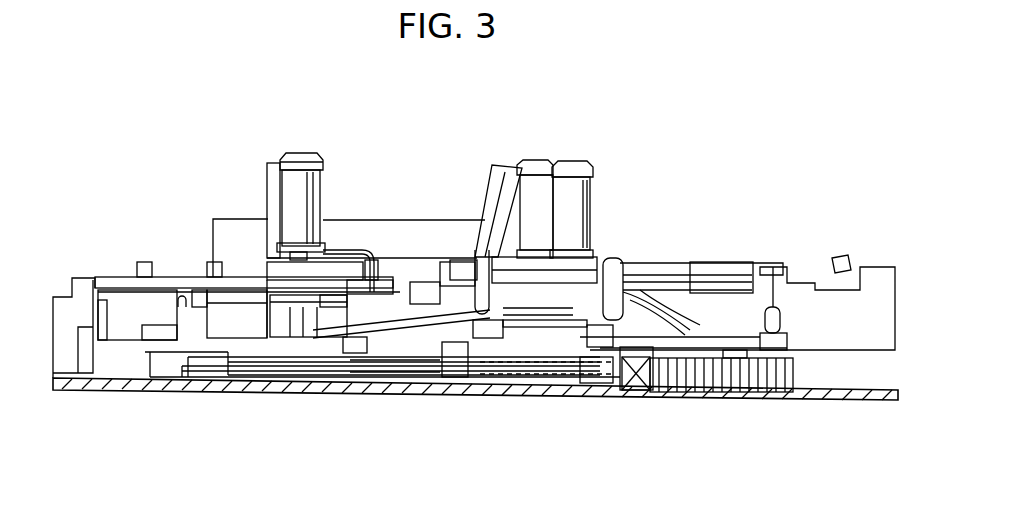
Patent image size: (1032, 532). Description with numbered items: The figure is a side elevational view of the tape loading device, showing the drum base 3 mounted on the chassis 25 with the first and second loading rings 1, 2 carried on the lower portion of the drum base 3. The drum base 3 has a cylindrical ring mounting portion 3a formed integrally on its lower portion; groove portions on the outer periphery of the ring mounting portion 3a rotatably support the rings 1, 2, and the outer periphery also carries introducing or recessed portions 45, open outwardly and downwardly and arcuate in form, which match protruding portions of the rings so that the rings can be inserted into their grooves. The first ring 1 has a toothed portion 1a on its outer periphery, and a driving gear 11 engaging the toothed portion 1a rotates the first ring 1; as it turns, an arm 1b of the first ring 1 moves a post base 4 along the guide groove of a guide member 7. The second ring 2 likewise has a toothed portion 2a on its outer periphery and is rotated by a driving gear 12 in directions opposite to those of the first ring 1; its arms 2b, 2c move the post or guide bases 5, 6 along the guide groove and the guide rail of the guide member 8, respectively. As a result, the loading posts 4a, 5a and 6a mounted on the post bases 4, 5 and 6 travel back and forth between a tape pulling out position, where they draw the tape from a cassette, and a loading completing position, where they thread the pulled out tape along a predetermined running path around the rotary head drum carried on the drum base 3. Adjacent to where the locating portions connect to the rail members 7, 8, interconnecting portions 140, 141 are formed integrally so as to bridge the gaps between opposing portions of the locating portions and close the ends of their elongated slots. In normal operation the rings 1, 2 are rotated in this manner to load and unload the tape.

The first loading ring 1 is at (240, 383).
The toothed portion 1a is at (540, 377).
The arm 1b is at (413, 303).
The second loading ring 2 is at (267, 358).
The toothed portion 2a is at (590, 390).
The arm 2b is at (480, 353).
The arm 2c is at (417, 347).
The drum base 3 is at (722, 283).
The cylindrical ring mounting portion 3a is at (320, 377).
The post base 4 is at (330, 272).
The loading post 4a is at (293, 187).
The post or guide base 5 is at (490, 258).
The loading post 5a is at (493, 193).
The post or guide base 6 is at (597, 260).
The loading post 6a is at (587, 193).
The guide member 7 is at (178, 283).
The guide member 8 is at (660, 297).
The driving gear 11 is at (633, 403).
The driving gear 12 is at (673, 390).
The chassis 25 is at (158, 388).
The introducing or recessed portion 45 is at (400, 377).
The interconnecting portion 140 is at (135, 330).
The interconnecting portion 141 is at (672, 393).